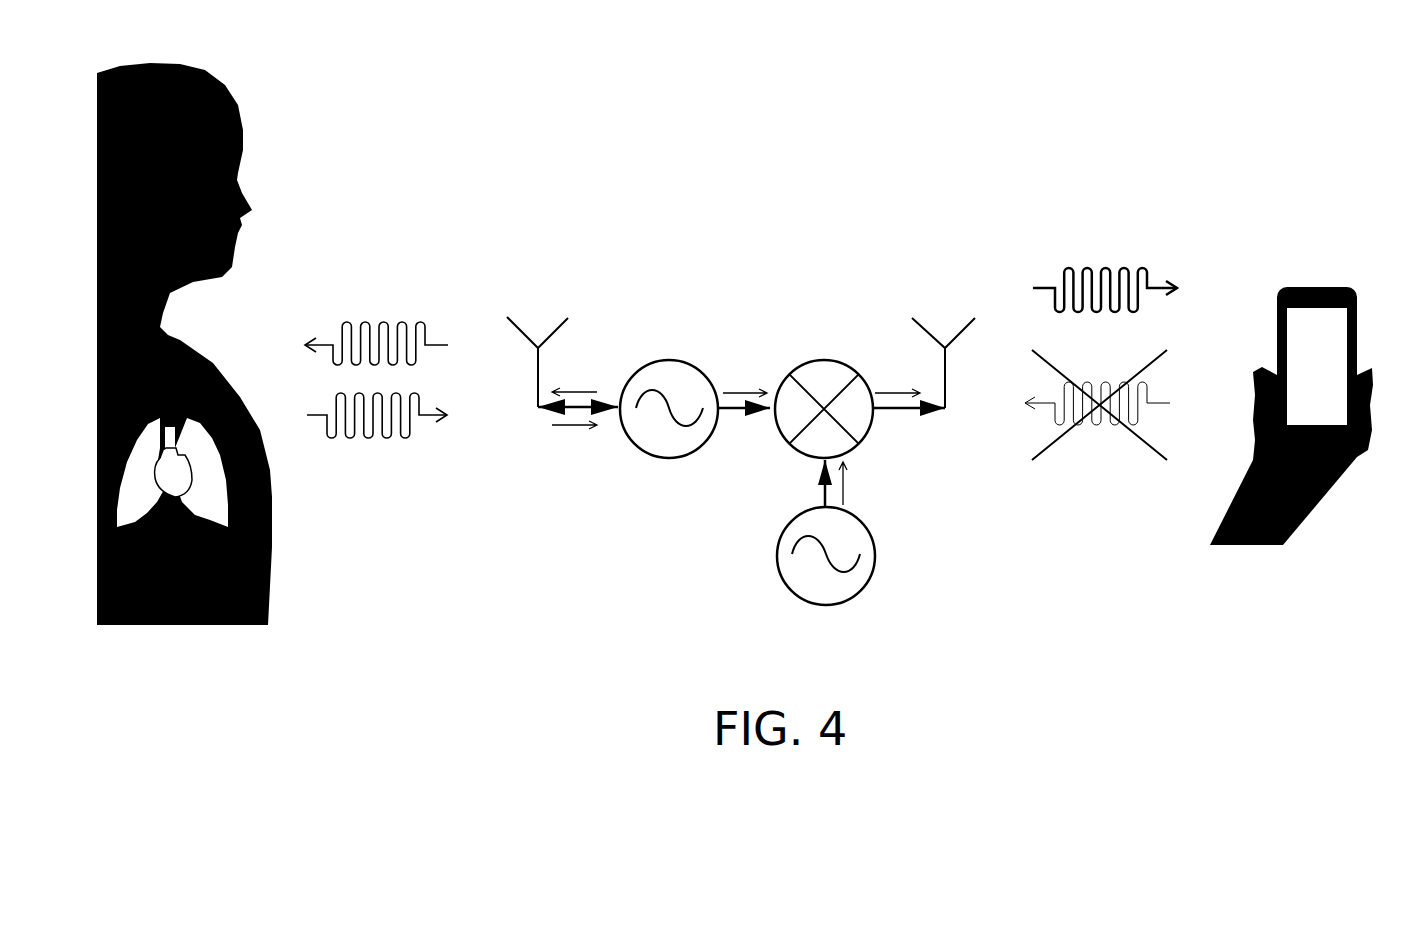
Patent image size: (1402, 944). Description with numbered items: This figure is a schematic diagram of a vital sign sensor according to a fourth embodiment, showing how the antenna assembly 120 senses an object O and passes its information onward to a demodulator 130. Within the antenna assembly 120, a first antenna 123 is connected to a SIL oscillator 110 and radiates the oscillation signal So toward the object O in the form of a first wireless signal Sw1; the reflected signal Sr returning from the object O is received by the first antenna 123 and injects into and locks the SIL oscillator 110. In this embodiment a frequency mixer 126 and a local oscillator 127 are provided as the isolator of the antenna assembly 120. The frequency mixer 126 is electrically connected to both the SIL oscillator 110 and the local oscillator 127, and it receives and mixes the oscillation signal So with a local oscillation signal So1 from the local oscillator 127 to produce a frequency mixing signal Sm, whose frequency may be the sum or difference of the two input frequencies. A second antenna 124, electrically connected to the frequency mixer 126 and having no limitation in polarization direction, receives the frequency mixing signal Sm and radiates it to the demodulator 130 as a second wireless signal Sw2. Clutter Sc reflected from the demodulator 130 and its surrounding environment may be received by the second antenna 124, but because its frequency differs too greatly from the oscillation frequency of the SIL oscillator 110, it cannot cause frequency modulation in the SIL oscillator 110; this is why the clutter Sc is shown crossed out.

The object O is at (238, 115).
The first wireless signal Sw1 is at (377, 322).
The reflected signal Sr is at (373, 438).
The antenna assembly 120 is at (518, 242).
The first antenna 123 is at (520, 333).
The oscillation signal So is at (659, 378).
The SIL oscillator 110 is at (668, 360).
The frequency mixer 126 is at (823, 360).
The frequency mixing signal Sm is at (899, 378).
The second antenna 124 is at (928, 332).
The local oscillator 127 is at (777, 557).
The local oscillation signal So1 is at (871, 485).
The second wireless signal Sw2 is at (1098, 268).
The clutter Sc is at (1090, 425).
The demodulator 130 is at (1315, 288).